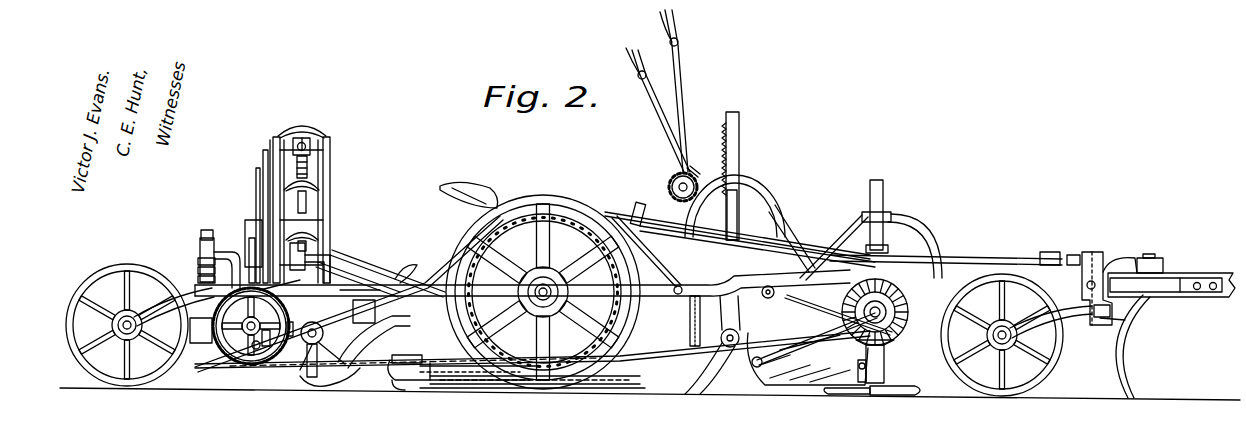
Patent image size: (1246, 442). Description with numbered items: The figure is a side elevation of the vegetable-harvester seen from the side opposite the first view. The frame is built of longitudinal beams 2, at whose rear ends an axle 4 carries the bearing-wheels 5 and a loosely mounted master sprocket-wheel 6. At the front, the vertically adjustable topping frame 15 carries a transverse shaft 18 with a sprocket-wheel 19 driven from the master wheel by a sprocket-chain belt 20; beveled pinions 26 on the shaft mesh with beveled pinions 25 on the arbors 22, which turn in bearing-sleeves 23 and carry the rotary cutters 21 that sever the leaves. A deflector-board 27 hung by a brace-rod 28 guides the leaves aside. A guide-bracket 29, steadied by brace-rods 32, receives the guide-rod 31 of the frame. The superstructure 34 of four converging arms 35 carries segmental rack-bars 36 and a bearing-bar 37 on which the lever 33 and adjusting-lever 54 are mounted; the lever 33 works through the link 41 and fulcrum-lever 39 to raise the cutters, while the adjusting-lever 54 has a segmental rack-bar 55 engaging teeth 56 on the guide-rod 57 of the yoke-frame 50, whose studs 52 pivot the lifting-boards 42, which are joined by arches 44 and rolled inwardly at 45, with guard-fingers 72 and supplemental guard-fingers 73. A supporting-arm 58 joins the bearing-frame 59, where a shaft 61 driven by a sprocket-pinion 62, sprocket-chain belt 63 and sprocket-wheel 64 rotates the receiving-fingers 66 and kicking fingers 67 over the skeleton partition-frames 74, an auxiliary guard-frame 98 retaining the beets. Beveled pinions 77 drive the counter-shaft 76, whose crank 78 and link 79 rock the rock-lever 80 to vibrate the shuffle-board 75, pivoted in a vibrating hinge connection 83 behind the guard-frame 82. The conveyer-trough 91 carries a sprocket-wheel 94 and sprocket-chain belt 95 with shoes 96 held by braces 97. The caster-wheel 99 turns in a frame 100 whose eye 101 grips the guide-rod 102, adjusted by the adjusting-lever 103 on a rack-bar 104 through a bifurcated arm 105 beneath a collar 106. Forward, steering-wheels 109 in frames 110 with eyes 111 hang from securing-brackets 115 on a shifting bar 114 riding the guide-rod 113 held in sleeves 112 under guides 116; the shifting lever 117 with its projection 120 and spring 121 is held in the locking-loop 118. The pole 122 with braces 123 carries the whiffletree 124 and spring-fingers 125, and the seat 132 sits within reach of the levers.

The longitudinal beams 2 is at (690, 292).
The axle 4 is at (549, 295).
The bearing-wheels 5 is at (534, 198).
The master sprocket-wheel 6 is at (556, 212).
The frame 15 is at (886, 242).
The shaft 18 is at (882, 317).
The sprocket-wheel 19 is at (906, 300).
The sprocket-chain belt 20 is at (680, 359).
The rotary cutters 21 is at (906, 394).
The arbors 22 is at (872, 392).
The bearing-sleeves 23 is at (886, 374).
The beveled pinions 25 is at (884, 350).
The beveled pinions 26 is at (894, 318).
The deflector-board 27 is at (807, 359).
The brace-rod 28 is at (790, 327).
The guide-bracket 29 is at (940, 250).
The guide-rod 31 is at (884, 192).
The brace-rods 32 is at (845, 235).
The lever 33 is at (670, 152).
The superstructure 34 is at (735, 200).
The arms 35 is at (776, 205).
The segmental rack-bars 36 is at (690, 170).
The bearing-bar 37 is at (668, 186).
The fulcrum-lever 39 is at (827, 310).
The link 41 is at (672, 270).
The lifting-boards 42 is at (532, 382).
The arches 44 is at (690, 328).
The rolled portions 45 is at (470, 380).
The yoke-frame 50 is at (740, 246).
The studs 52 is at (730, 348).
The adjusting-lever 54 is at (678, 90).
The segmental rack-bar 55 is at (740, 212).
The teeth 56 is at (723, 138).
The guide-rod 57 is at (739, 122).
The supporting-arm 58 is at (360, 292).
The bearing-frame 59 is at (280, 289).
The shaft 61 is at (308, 345).
The sprocket-pinion 62 is at (322, 344).
The sprocket-chain belt 63 is at (336, 377).
The sprocket-wheel 64 is at (240, 350).
The receiving-fingers 66 is at (410, 265).
The kicking fingers 67 is at (358, 340).
The guard-fingers 72 is at (405, 390).
The supplemental guard-fingers 73 is at (405, 372).
The skeleton partition-frames 74 is at (378, 321).
The shuffle-board 75 is at (326, 262).
The counter-shaft 76 is at (291, 338).
The beveled pinions 77 is at (302, 344).
The crank 78 is at (255, 350).
The link 79 is at (268, 346).
The rock-lever 80 is at (306, 258).
The guard-frame 82 is at (264, 210).
The vibrating hinge connection 83 is at (352, 274).
The conveyer-trough 91 is at (283, 137).
The sprocket-wheel 94 is at (301, 146).
The sprocket-chain belt 95 is at (309, 170).
The shoes 96 is at (304, 124).
The braces 97 is at (312, 145).
The auxiliary guard-frame 98 is at (390, 272).
The caster-wheel 99 is at (112, 270).
The frame 100 is at (203, 248).
The eye 101 is at (199, 279).
The guide-rod 102 is at (222, 233).
The adjusting-lever 103 is at (250, 224).
The rack-bar 104 is at (250, 254).
The bifurcated arm 105 is at (199, 269).
The collar 106 is at (199, 260).
The steering-wheels 109 is at (1050, 372).
The frames 110 is at (1080, 318).
The eye 111 is at (1115, 320).
The sleeves 112 is at (1070, 255).
The guide-rod 113 is at (1128, 262).
The shifting bar 114 is at (1093, 282).
The securing-brackets 115 is at (1166, 285).
The guides 116 is at (1088, 252).
The shifting lever 117 is at (1000, 256).
The locking-loop 118 is at (626, 210).
The projection 120 is at (543, 292).
The spring 121 is at (640, 206).
The pole 122 is at (1171, 276).
The braces 123 is at (1183, 294).
The whiffletree 124 is at (1158, 258).
The spring-fingers 125 is at (1116, 358).
The seat 132 is at (469, 189).